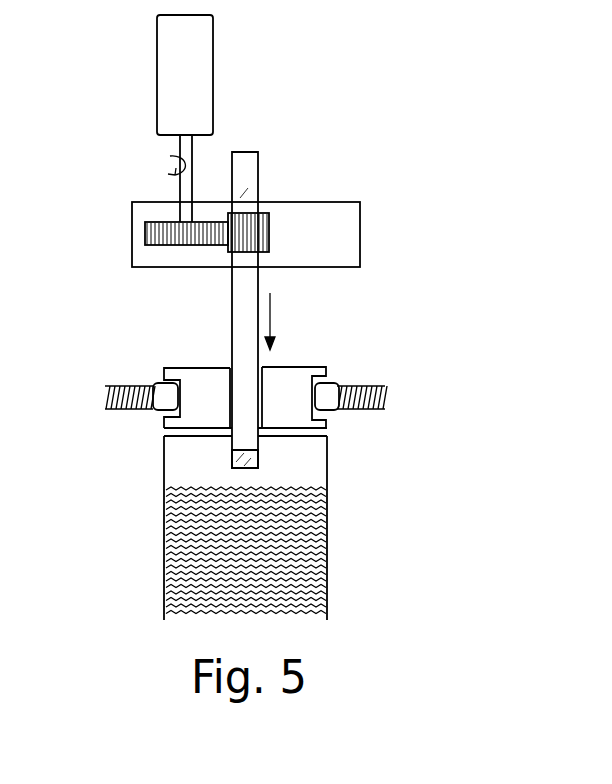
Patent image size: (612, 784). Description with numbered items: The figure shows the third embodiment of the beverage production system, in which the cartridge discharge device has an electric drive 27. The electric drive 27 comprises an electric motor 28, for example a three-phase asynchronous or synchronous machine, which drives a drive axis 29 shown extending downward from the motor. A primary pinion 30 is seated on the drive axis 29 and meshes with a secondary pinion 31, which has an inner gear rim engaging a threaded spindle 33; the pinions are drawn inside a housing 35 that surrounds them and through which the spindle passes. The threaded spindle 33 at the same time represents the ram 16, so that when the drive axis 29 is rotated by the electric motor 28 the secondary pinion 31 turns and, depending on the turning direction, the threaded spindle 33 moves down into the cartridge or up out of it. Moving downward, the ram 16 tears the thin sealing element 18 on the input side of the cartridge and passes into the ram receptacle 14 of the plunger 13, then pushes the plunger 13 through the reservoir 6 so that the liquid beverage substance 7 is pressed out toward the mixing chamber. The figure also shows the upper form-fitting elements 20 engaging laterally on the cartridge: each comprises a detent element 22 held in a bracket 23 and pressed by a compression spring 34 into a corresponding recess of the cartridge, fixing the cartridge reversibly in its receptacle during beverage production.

The electric drive 27 is at (258, 75).
The electric motor 28 is at (195, 42).
The drive axis 29 is at (185, 170).
The primary pinion 30 is at (177, 235).
The secondary pinion 31 is at (250, 240).
The threaded spindle 33 is at (264, 303).
The gear housing 35 is at (327, 244).
The ram 16 is at (237, 163).
The sealing element 18 is at (290, 440).
The upper form-fitting elements 20 is at (420, 360).
The detent element 22 is at (165, 395).
The bracket 23 is at (165, 425).
The compression spring 34 is at (105, 403).
The plunger 13 is at (200, 470).
The ram receptacle 14 is at (258, 458).
The reservoir 6 is at (295, 550).
The liquid beverage substance 7 is at (300, 555).